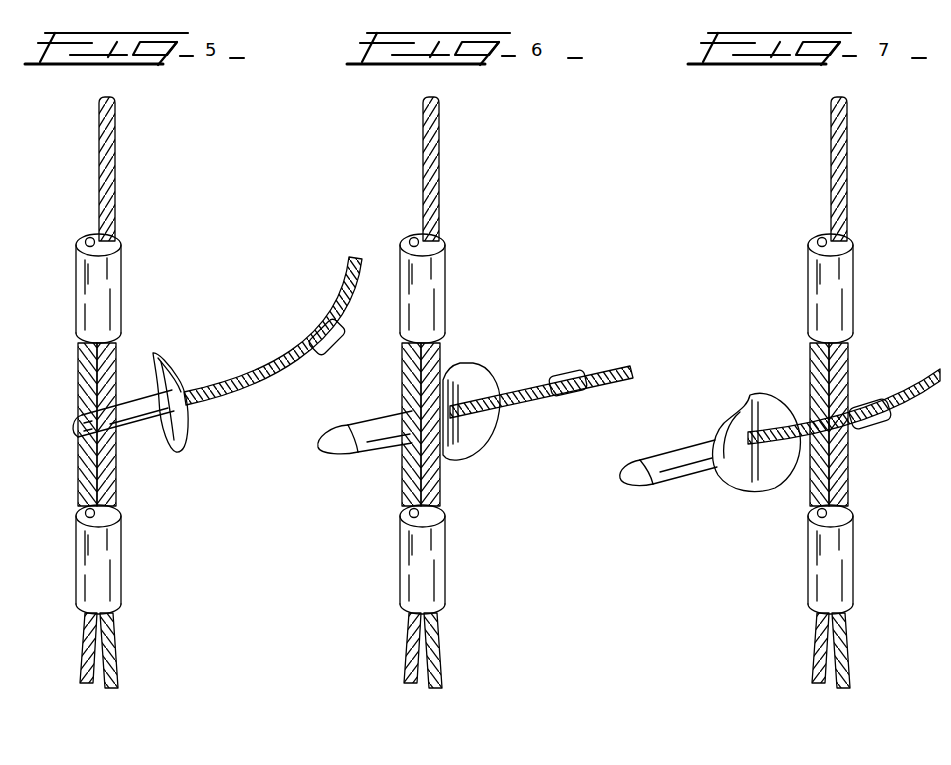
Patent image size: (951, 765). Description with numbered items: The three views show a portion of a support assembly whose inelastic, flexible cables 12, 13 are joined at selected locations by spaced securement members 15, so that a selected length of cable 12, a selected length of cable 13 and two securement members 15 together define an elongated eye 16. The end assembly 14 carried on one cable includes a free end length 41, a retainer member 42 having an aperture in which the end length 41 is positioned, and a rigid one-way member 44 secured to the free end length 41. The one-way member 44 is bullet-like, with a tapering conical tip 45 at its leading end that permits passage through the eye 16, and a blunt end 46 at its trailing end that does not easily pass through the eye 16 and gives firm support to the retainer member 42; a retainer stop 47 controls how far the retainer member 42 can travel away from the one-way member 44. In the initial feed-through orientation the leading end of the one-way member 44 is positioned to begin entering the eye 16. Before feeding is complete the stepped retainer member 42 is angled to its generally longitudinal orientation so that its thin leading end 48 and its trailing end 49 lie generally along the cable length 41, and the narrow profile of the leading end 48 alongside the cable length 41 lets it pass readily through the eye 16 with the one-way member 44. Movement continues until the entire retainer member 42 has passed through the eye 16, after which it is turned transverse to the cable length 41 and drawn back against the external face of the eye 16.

In FIG. 5, the cable 12 is at (118, 652).
In FIG. 6, the cable 12 is at (441, 673).
In FIG. 7, the cable 12 is at (849, 667).
In FIG. 5, the cable 13 is at (82, 665).
In FIG. 6, the cable 13 is at (402, 677).
In FIG. 7, the cable 13 is at (812, 667).
In FIG. 5, the end assembly 14 is at (201, 375).
In FIG. 5, the securement member 15 is at (76, 258).
In FIG. 6, the securement member 15 is at (443, 308).
In FIG. 7, the securement member 15 is at (840, 300).
In FIG. 5, the elongated eye 16 is at (96, 390).
In FIG. 6, the elongated eye 16 is at (417, 380).
In FIG. 7, the elongated eye 16 is at (830, 388).
In FIG. 5, the free end length 41 is at (300, 365).
In FIG. 6, the free end length 41 is at (547, 393).
In FIG. 7, the free end length 41 is at (907, 407).
In FIG. 5, the retainer member 42 is at (190, 430).
In FIG. 6, the retainer member 42 is at (481, 377).
In FIG. 7, the retainer member 42 is at (737, 425).
In FIG. 5, the rigid one-way member 44 is at (135, 424).
In FIG. 6, the rigid one-way member 44 is at (375, 442).
In FIG. 7, the rigid one-way member 44 is at (697, 469).
In FIG. 5, the conical tip 45 is at (84, 430).
In FIG. 6, the conical tip 45 is at (343, 438).
In FIG. 7, the conical tip 45 is at (637, 467).
In FIG. 7, the blunt end 46 is at (715, 453).
In FIG. 5, the retainer stop 47 is at (322, 320).
In FIG. 6, the retainer stop 47 is at (567, 378).
In FIG. 7, the retainer stop 47 is at (877, 400).
In FIG. 5, the leading end 48 is at (186, 455).
In FIG. 6, the leading end 48 is at (423, 412).
In FIG. 7, the leading end 48 is at (727, 473).
In FIG. 5, the trailing end 49 is at (155, 372).
In FIG. 6, the trailing end 49 is at (492, 416).
In FIG. 7, the trailing end 49 is at (790, 447).